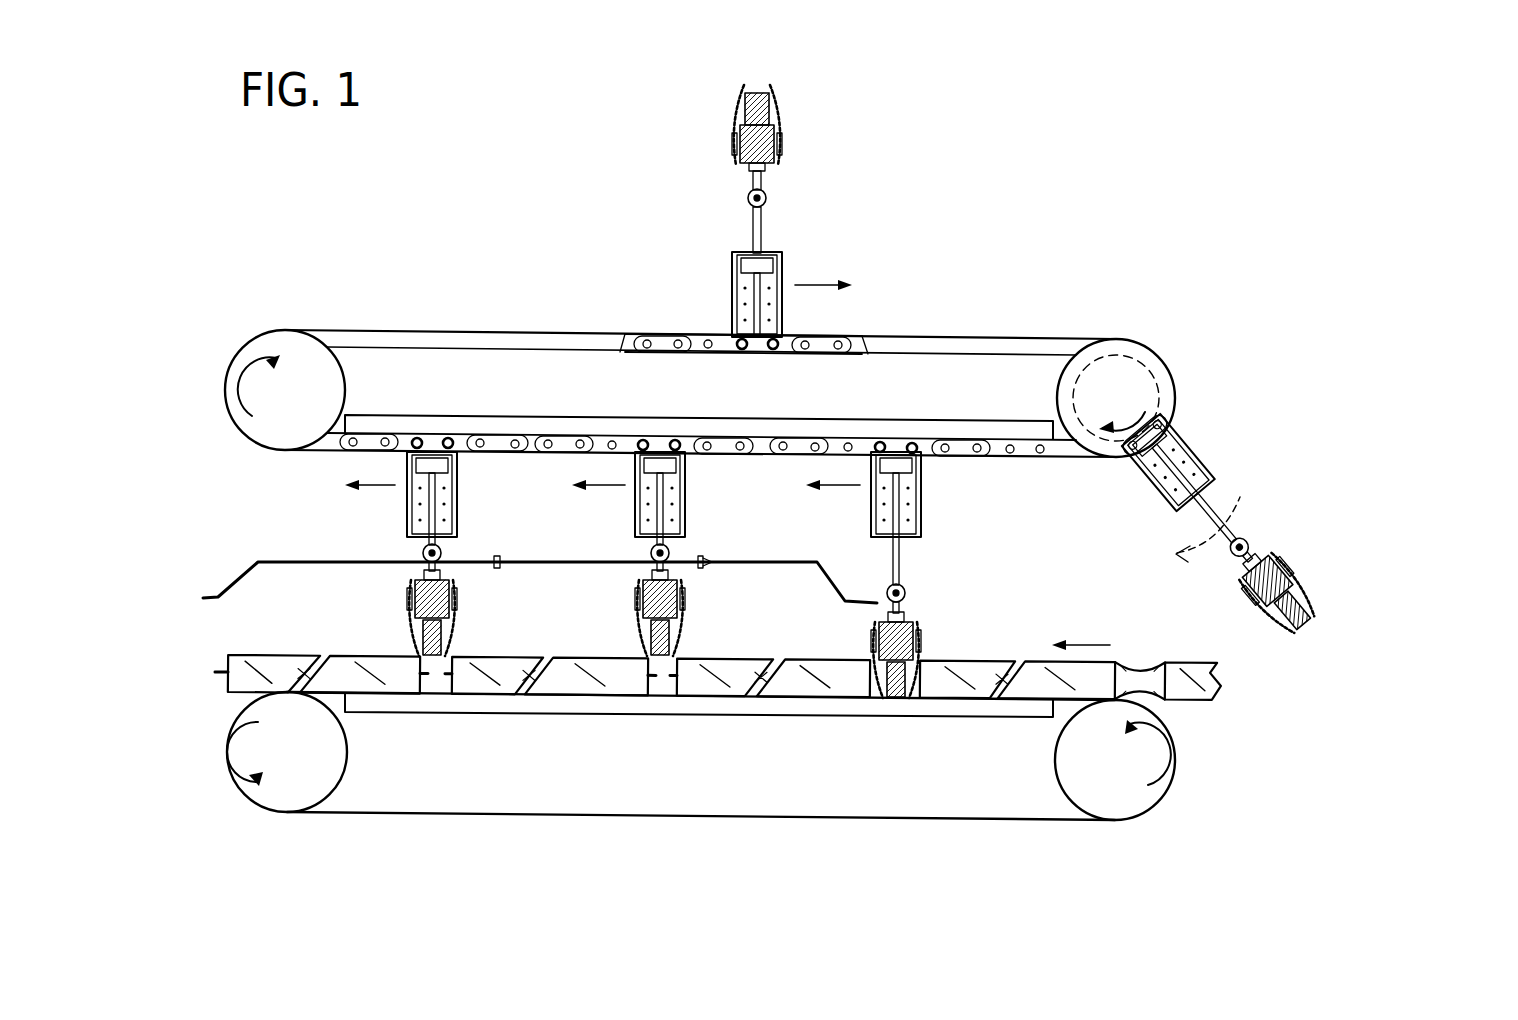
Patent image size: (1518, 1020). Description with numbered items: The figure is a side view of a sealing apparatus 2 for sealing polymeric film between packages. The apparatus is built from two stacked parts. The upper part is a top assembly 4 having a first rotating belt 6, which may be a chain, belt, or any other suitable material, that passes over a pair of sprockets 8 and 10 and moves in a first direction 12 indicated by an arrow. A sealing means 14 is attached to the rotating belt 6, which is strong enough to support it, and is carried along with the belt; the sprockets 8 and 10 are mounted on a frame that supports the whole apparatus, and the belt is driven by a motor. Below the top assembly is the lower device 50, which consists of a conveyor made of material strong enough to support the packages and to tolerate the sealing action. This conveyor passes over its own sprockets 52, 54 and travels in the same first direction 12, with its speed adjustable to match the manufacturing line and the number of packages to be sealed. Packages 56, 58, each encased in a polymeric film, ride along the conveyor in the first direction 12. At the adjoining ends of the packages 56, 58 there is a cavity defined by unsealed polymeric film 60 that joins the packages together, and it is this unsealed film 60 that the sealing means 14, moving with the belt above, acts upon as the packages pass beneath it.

The sealing apparatus 2 is at (1122, 195).
The top assembly 4 is at (1307, 390).
The first rotating belt 6 is at (663, 337).
The sprocket 8 is at (258, 341).
The sprocket 10 is at (1143, 352).
The first direction 12 is at (375, 461).
The sealing means 14 is at (812, 190).
The lower device 50 is at (1330, 745).
The sprocket 52 is at (268, 800).
The sprocket 54 is at (1135, 797).
The package 56 is at (573, 668).
The package 58 is at (790, 677).
The unsealed polymeric film 60 is at (1118, 672).